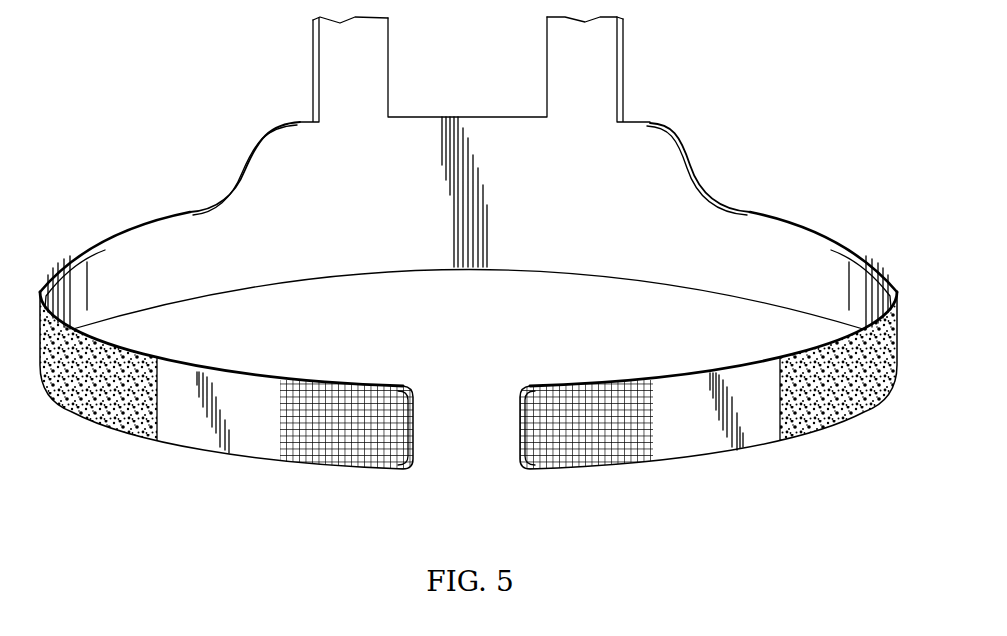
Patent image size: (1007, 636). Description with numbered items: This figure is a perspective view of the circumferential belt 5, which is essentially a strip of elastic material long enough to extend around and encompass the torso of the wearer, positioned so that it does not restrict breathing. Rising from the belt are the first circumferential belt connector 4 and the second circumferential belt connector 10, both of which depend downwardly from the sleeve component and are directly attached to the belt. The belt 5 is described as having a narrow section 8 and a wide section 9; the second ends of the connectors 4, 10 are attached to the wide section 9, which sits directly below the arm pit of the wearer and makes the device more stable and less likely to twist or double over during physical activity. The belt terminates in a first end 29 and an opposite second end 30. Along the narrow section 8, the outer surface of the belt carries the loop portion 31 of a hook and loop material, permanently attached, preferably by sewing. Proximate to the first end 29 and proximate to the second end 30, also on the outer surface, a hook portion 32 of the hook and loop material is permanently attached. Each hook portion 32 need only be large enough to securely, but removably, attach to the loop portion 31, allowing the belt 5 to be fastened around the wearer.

The circumferential belt 5 is at (752, 64).
The first circumferential belt connector 4 is at (593, 58).
The second circumferential belt connector 10 is at (370, 58).
The wide section 9 is at (506, 181).
The narrow section 8 is at (110, 238).
The first end 29 is at (418, 433).
The second end 30 is at (518, 427).
The loop portion 31 is at (83, 393).
The hook portion 32 is at (322, 450).